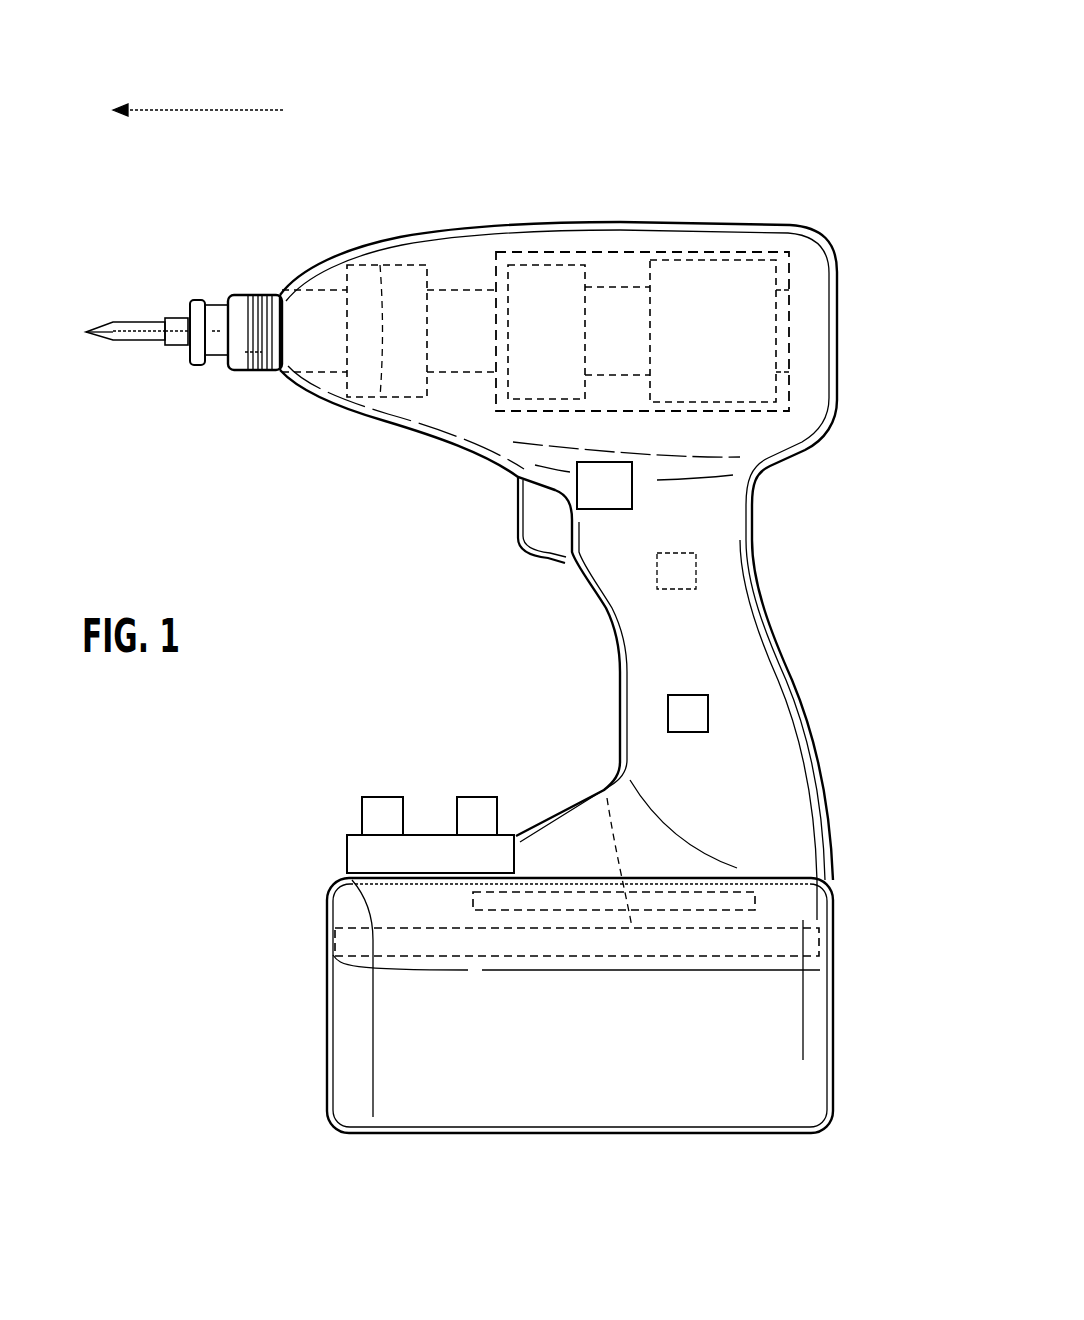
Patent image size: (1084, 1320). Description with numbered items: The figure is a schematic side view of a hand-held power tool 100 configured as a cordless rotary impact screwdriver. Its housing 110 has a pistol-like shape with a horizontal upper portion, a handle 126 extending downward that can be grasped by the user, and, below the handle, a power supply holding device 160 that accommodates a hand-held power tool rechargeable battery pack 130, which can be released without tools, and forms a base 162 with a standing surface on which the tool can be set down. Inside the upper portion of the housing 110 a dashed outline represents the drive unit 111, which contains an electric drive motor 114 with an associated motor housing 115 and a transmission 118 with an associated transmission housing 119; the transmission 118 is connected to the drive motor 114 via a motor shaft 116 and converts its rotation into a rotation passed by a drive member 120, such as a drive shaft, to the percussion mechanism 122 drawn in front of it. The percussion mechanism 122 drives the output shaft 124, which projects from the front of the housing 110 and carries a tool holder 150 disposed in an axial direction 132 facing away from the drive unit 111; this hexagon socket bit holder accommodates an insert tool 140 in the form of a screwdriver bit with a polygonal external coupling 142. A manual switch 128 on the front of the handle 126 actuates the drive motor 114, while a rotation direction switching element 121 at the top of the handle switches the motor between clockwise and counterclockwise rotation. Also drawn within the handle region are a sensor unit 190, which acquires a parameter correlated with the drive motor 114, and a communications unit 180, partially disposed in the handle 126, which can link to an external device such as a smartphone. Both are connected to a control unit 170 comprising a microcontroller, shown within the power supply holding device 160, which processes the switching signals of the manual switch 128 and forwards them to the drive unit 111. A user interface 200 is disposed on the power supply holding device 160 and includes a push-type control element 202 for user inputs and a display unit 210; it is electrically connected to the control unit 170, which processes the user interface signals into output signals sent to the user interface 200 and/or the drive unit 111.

The hand-held power tool 100 is at (598, 500).
The housing 110 is at (808, 363).
The drive unit 111 is at (693, 255).
The drive motor 114 is at (747, 297).
The motor housing 115 is at (790, 327).
The motor shaft 116 is at (622, 310).
The transmission 118 is at (496, 262).
The transmission housing 119 is at (540, 290).
The drive member 120 is at (458, 310).
The rotation direction switching element 121 is at (610, 486).
The percussion mechanism 122 is at (405, 290).
The output shaft 124 is at (318, 318).
The handle 126 is at (743, 645).
The manual switch 128 is at (548, 518).
The hand-held power tool rechargeable battery pack 130 is at (622, 1023).
The axial direction 132 is at (212, 108).
The insert tool 140 is at (137, 327).
The polygonal external coupling 142 is at (177, 338).
The tool holder 150 is at (193, 298).
The power supply holding device 160 is at (663, 940).
The base 162 is at (790, 897).
The control unit 170 is at (543, 900).
The communications unit 180 is at (688, 713).
The sensor unit 190 is at (678, 572).
The user interface 200 is at (354, 809).
The control element 202 is at (380, 815).
The display unit 210 is at (478, 815).